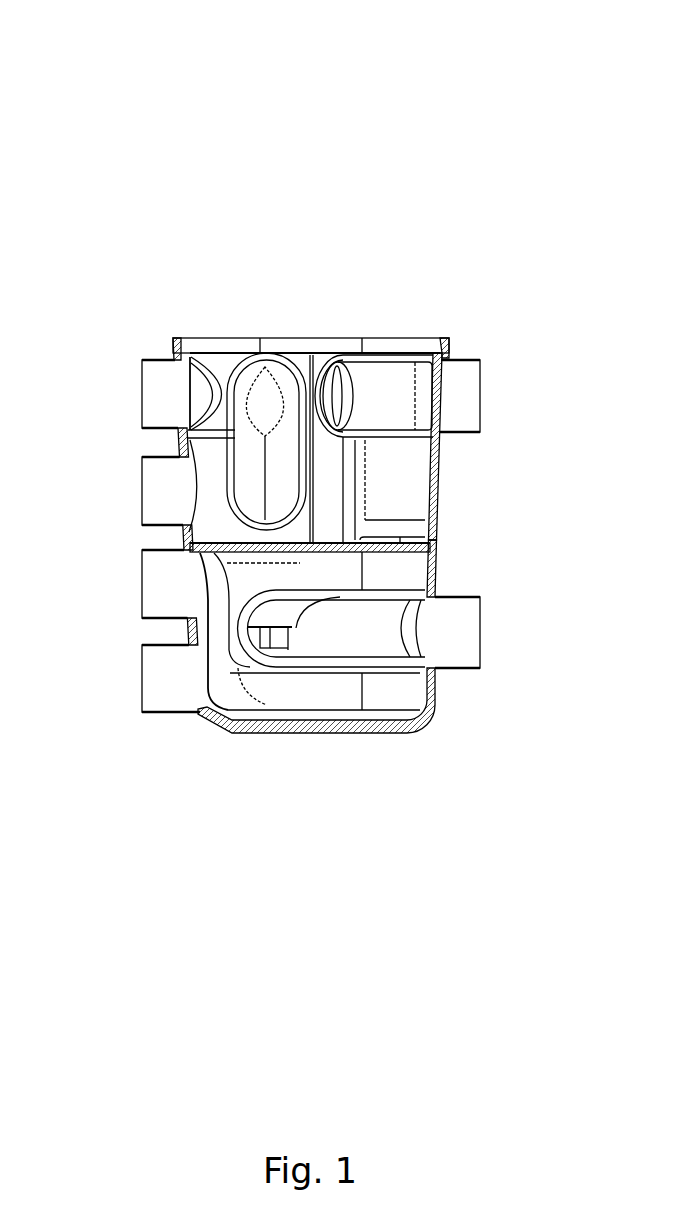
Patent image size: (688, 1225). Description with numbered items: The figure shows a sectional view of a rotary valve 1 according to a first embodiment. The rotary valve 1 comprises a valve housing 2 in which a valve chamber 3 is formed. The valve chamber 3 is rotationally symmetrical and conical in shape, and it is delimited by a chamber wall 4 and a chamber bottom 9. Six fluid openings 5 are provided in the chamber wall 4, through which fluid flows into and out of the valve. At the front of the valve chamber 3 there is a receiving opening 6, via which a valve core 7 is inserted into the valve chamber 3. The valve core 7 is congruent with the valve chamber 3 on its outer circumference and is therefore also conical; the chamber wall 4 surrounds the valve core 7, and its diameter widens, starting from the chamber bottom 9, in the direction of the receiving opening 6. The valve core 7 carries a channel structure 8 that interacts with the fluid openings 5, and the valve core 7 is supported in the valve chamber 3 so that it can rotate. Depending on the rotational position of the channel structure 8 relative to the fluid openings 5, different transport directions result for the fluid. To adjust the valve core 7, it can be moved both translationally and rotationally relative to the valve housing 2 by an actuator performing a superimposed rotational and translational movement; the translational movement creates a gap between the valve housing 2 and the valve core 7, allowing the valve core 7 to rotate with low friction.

The rotary valve 1 is at (454, 118).
The valve housing 2 is at (435, 495).
The valve chamber 3 is at (224, 327).
The chamber wall 4 is at (438, 565).
The fluid openings 5 is at (458, 400).
The receiving opening 6 is at (347, 308).
The valve core 7 is at (355, 648).
The channel structure 8 is at (272, 472).
The chamber bottom 9 is at (327, 733).